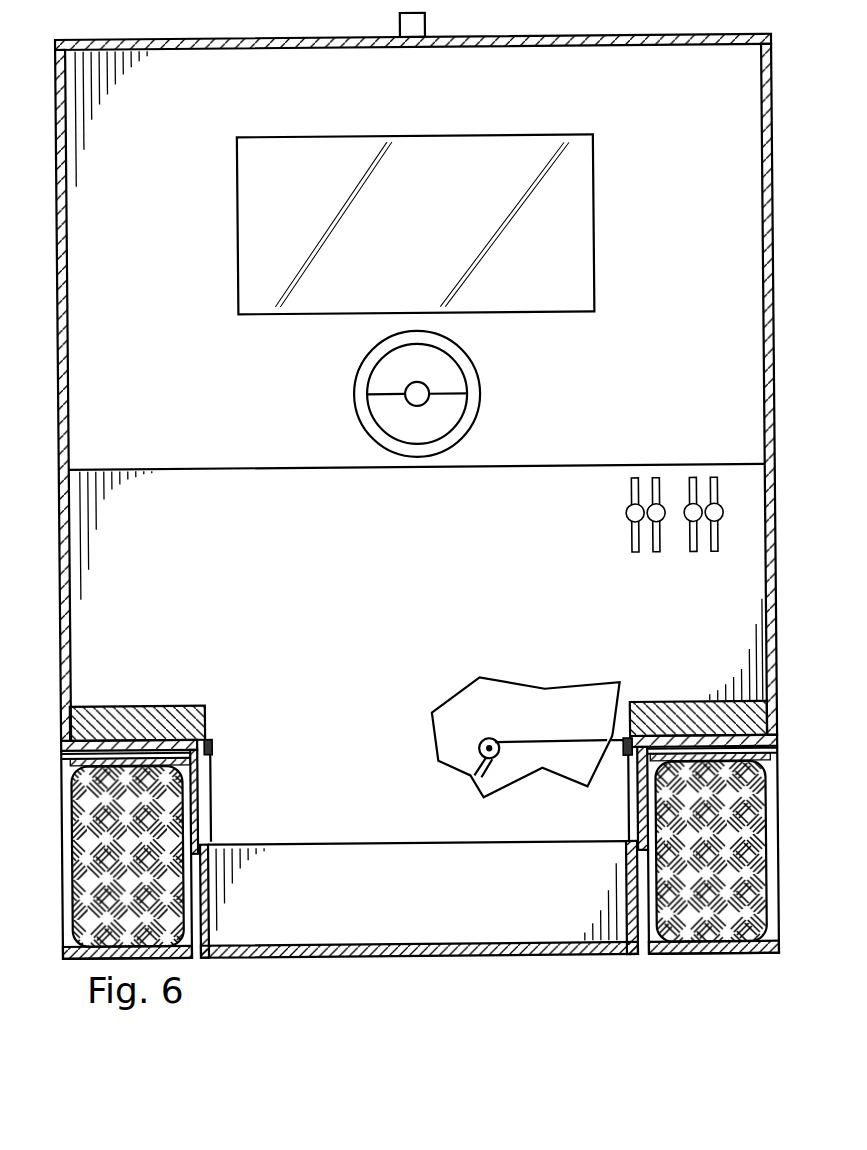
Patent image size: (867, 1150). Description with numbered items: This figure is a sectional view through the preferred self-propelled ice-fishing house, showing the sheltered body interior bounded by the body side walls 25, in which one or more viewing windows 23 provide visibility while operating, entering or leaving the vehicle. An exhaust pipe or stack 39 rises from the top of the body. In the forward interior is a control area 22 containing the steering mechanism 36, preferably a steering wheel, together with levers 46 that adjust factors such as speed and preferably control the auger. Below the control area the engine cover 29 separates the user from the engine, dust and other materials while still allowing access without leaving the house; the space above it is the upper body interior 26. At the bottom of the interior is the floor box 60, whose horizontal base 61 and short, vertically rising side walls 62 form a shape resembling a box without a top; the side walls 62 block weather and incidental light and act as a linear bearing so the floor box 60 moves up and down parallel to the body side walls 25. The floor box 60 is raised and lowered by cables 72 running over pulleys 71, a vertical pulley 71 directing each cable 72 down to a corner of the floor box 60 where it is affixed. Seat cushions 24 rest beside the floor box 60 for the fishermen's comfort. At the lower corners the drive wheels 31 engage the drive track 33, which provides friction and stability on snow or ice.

The control area 22 is at (232, 425).
The viewing window 23 is at (439, 236).
The seat cushion 24 is at (176, 707).
The side wall 25 is at (760, 242).
The upper compartment 26 is at (636, 113).
The engine cover 29 is at (370, 554).
The drive wheel 31 is at (722, 869).
The drive track 33 is at (667, 953).
The steering mechanism 36 is at (471, 392).
The exhaust pipe or stack 39 is at (410, 28).
The lever 46 is at (710, 483).
The floor box 60 is at (311, 836).
The base 61 is at (359, 948).
The side wall 62 is at (482, 925).
The pulley 71 is at (206, 748).
The cable 72 is at (205, 787).